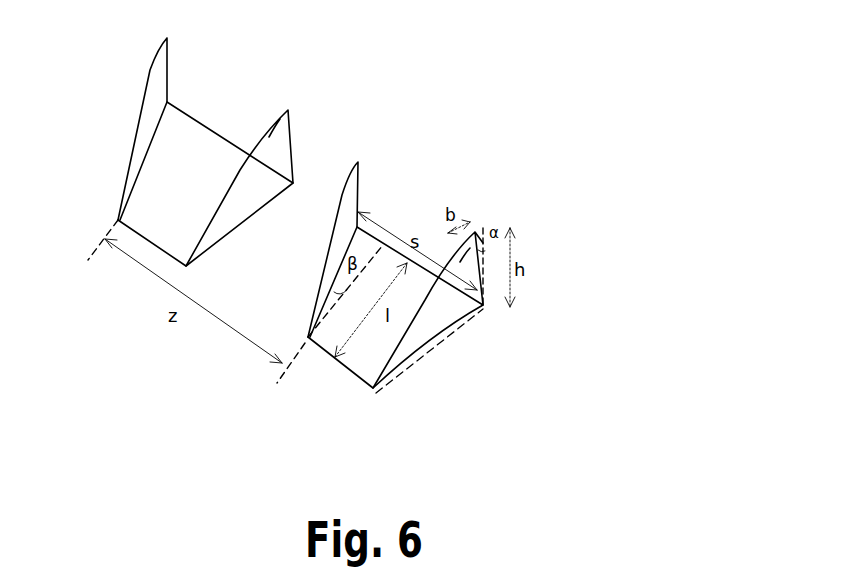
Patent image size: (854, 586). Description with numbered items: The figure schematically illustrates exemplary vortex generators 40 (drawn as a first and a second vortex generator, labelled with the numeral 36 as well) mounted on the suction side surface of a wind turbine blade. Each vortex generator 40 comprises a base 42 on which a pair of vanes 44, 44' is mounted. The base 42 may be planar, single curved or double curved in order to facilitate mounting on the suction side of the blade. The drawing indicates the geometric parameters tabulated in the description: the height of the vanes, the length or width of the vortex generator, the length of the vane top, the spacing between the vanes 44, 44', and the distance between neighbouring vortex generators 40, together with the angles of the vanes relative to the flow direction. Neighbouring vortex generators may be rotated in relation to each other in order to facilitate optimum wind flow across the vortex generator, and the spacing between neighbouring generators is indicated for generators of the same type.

The nozzle element 36 is at (328, 241).
The vortex generator 40 is at (328, 241).
The base 42 is at (198, 139).
The vane 44 is at (383, 237).
The vane 44' is at (216, 187).